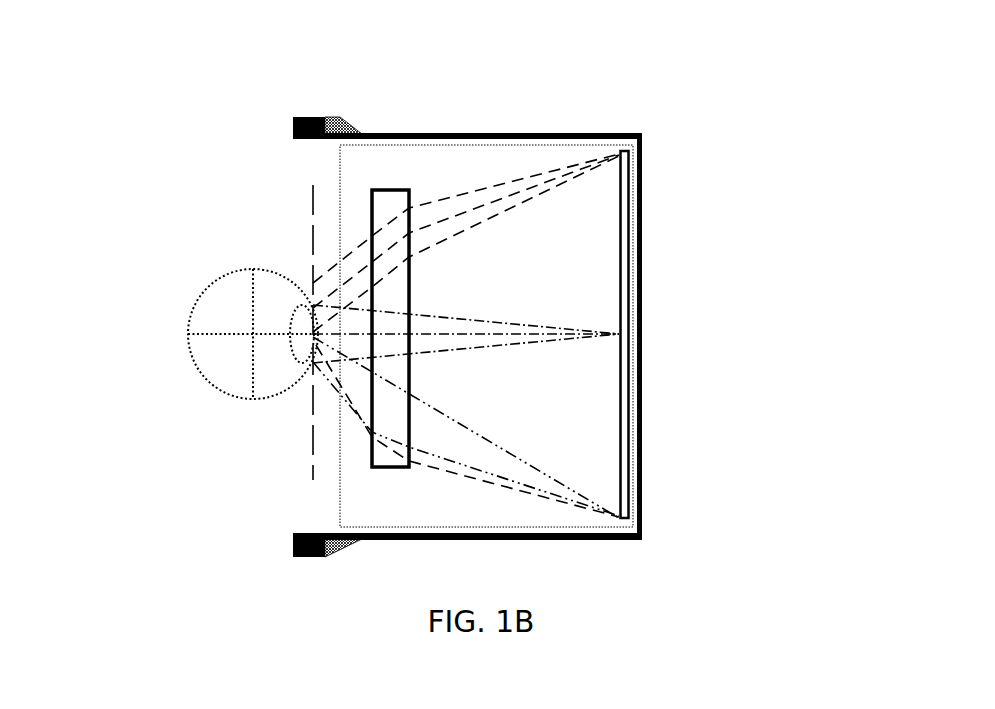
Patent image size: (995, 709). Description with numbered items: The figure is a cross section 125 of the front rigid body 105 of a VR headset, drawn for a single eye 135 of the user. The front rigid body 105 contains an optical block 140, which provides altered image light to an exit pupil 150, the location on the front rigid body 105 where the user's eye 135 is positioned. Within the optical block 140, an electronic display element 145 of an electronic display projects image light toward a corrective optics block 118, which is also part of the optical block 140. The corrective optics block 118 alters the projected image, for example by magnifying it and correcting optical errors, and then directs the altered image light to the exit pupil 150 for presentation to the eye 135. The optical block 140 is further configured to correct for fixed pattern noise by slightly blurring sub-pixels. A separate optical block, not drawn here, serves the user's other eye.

The cross section 125 is at (88, 26).
The front rigid body 105 is at (645, 127).
The corrective optics block 118 is at (372, 201).
The eye 135 is at (223, 279).
The optical block 140 is at (340, 221).
The electronic display element 145 is at (619, 210).
The exit pupil 150 is at (304, 462).